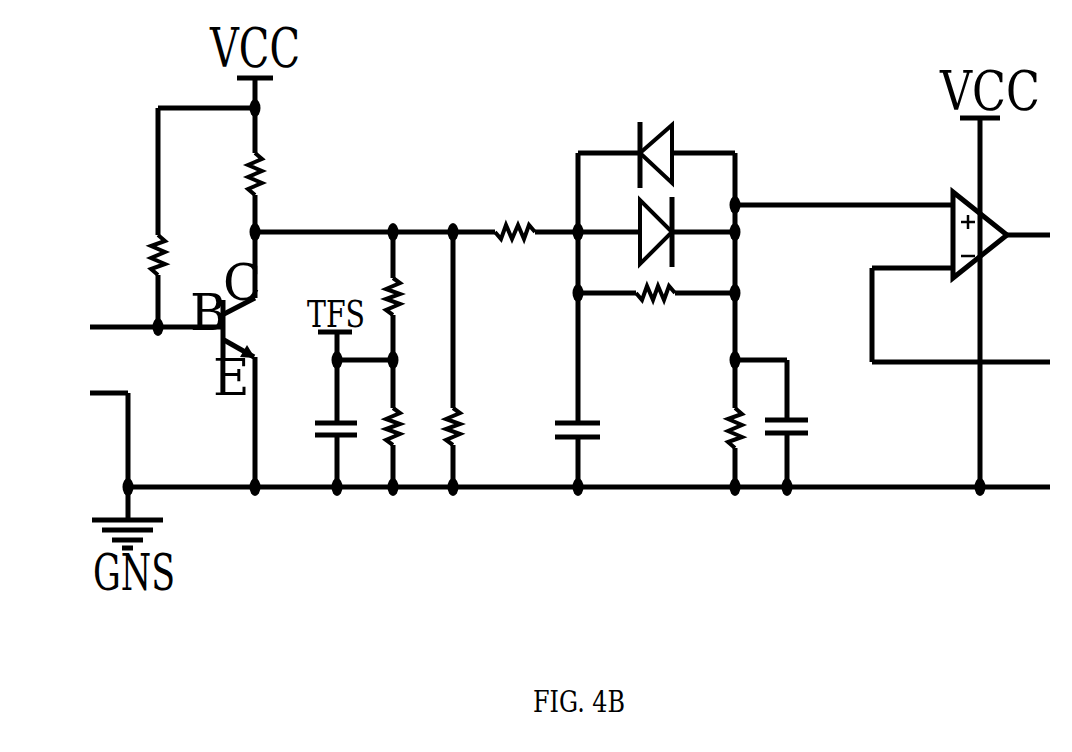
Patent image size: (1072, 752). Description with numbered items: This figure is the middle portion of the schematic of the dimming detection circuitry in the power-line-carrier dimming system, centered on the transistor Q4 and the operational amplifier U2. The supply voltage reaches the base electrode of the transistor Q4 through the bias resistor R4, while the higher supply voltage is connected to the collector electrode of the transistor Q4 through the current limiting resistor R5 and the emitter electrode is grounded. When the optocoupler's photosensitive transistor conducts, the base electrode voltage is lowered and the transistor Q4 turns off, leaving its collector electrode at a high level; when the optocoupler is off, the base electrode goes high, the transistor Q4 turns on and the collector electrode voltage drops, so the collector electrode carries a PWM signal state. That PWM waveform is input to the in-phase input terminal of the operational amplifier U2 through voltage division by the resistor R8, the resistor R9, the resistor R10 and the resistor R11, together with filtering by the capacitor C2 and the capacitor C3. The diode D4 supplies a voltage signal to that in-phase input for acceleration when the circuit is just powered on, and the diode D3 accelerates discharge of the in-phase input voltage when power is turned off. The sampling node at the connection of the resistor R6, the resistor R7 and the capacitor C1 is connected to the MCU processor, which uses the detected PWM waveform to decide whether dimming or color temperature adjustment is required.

The bias resistor R4 is at (186, 255).
The current limiting resistor R5 is at (289, 182).
The resistor R6 is at (415, 299).
The resistor R7 is at (415, 417).
The resistor R8 is at (488, 414).
The resistor R9 is at (512, 209).
The resistor R10 is at (656, 274).
The resistor R11 is at (698, 408).
The capacitor C1 is at (344, 435).
The capacitor C2 is at (597, 403).
The capacitor C3 is at (810, 398).
The diode D3 is at (656, 146).
The diode D4 is at (687, 225).
The transistor Q4 is at (257, 389).
The operational amplifier U2 is at (947, 235).